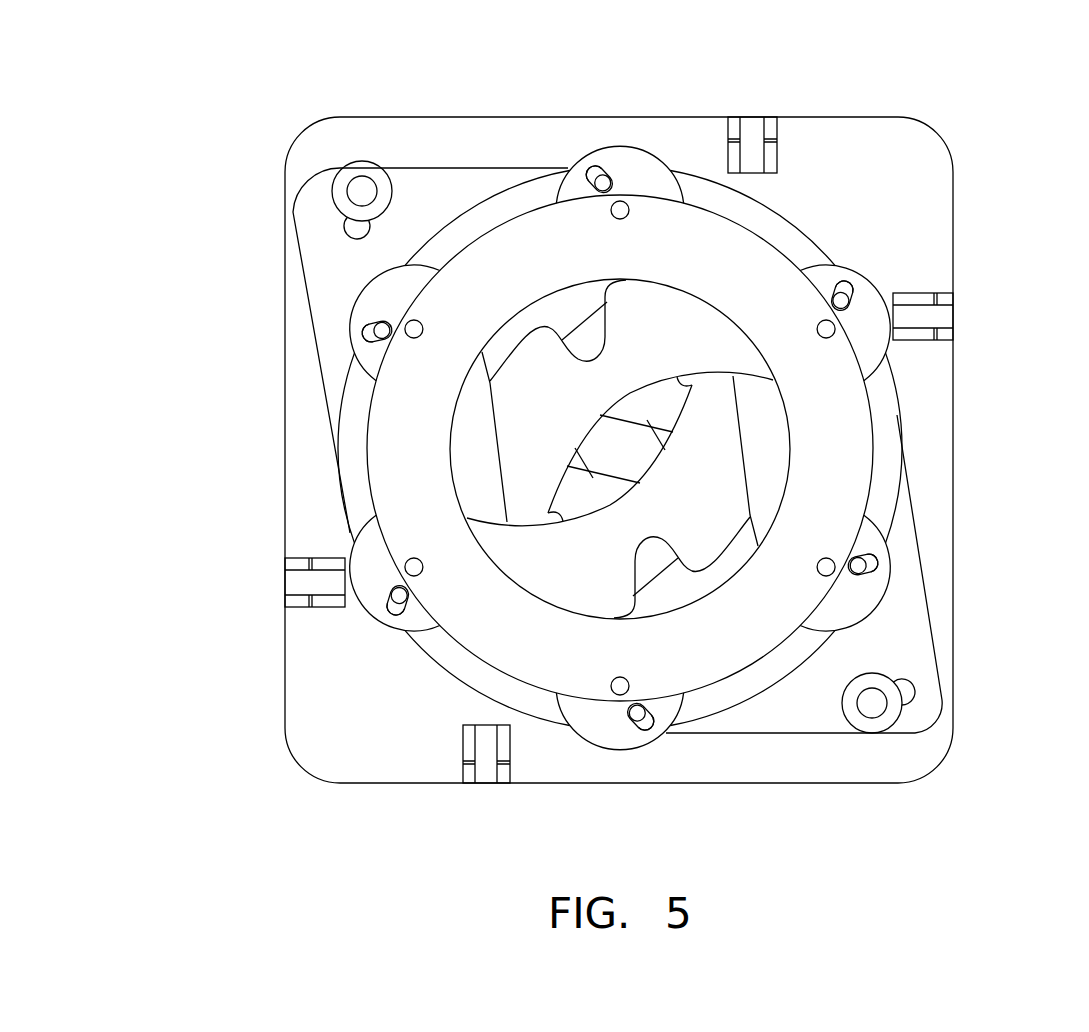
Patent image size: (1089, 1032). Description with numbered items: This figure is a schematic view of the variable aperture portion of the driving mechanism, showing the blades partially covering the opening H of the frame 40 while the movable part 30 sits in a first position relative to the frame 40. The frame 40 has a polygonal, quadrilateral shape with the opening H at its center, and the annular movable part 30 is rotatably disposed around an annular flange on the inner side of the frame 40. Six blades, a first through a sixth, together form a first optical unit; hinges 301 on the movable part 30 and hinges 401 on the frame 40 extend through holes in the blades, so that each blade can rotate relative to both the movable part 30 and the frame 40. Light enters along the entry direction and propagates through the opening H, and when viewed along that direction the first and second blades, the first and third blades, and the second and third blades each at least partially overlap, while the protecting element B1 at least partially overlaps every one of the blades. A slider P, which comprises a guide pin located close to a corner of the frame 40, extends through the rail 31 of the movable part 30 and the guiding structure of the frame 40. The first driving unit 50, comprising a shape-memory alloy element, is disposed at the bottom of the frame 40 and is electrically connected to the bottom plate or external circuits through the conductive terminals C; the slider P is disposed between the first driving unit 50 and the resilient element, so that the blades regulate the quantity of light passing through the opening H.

The movable part 30 is at (308, 350).
The rail 31 is at (346, 226).
The frame 40 is at (275, 294).
The first driving unit 50 is at (767, 140).
The hinge 301 is at (613, 208).
The hinge 401 is at (590, 181).
The protecting element B1 is at (750, 270).
The conductive terminal C is at (753, 138).
The opening H is at (623, 447).
The slider P is at (365, 163).